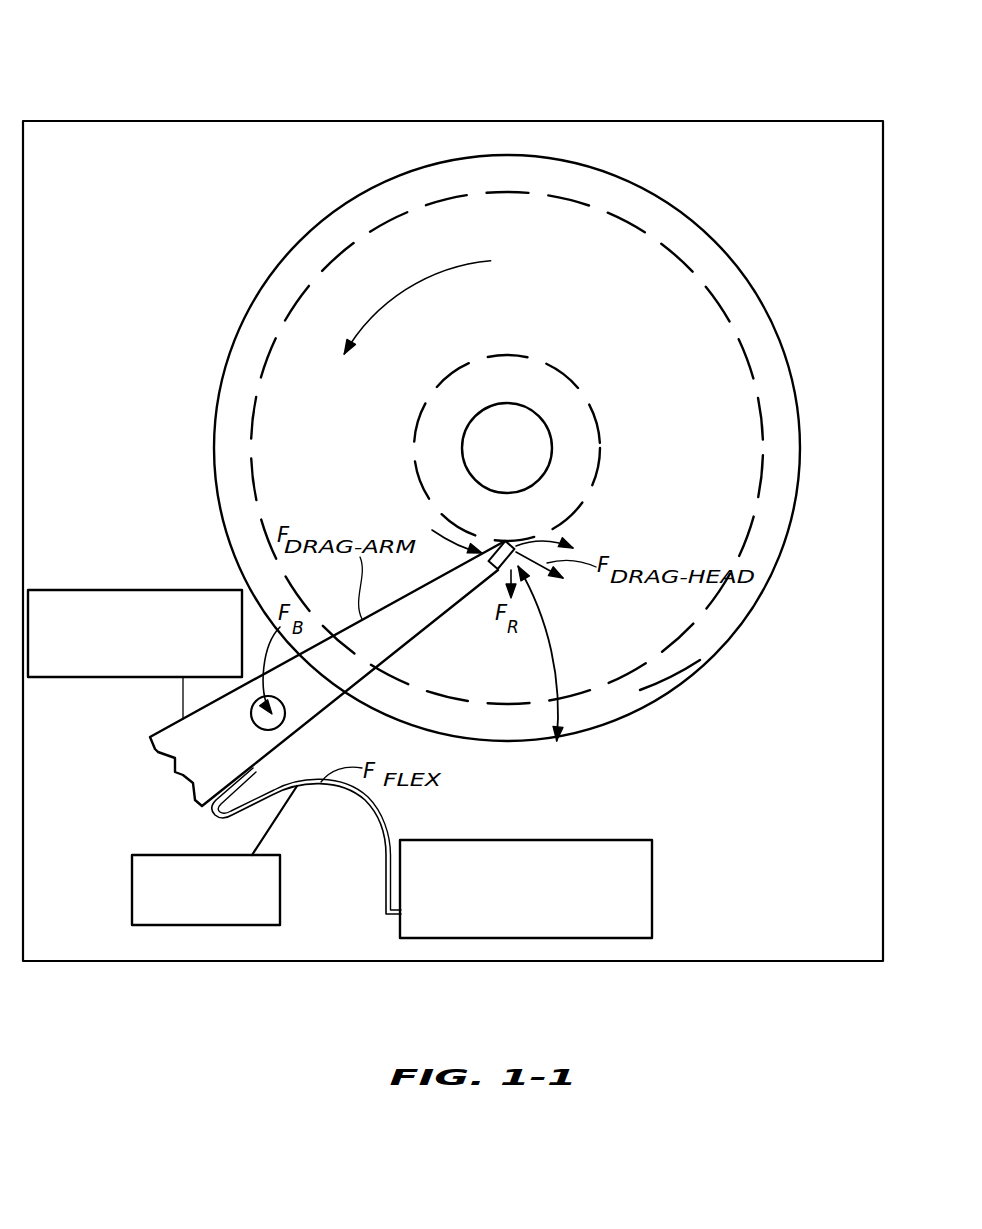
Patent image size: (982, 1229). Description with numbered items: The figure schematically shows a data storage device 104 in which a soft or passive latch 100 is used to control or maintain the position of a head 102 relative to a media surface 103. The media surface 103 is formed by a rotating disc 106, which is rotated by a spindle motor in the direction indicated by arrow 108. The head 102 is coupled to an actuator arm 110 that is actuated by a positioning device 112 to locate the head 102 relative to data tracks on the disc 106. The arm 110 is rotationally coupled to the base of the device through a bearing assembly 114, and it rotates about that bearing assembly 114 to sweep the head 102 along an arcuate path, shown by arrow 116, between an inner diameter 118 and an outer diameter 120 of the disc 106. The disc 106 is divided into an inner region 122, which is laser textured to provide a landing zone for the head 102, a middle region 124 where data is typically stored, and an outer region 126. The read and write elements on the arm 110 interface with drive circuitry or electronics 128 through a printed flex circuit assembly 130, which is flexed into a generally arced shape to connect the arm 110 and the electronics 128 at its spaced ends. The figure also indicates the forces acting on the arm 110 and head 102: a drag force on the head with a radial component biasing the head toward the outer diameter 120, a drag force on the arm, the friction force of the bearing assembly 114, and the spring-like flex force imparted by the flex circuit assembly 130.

The soft latch 100 is at (281, 873).
The head 102 is at (512, 538).
The media surface 103 is at (369, 462).
The data storage device 104 is at (716, 118).
The rotating disc 106 is at (693, 221).
The arrow 108 is at (423, 276).
The actuator arm 110 is at (403, 648).
The positioning device 112 is at (117, 590).
The bearing assembly 114 is at (292, 730).
The arrow 116 is at (553, 652).
The inner diameter 118 is at (540, 433).
The outer diameter 120 is at (650, 702).
The inner region 122 is at (580, 462).
The middle region 124 is at (692, 541).
The outer region 126 is at (706, 634).
The drive circuitry or electronics 128 is at (533, 840).
The flex circuit assembly 130 is at (378, 811).